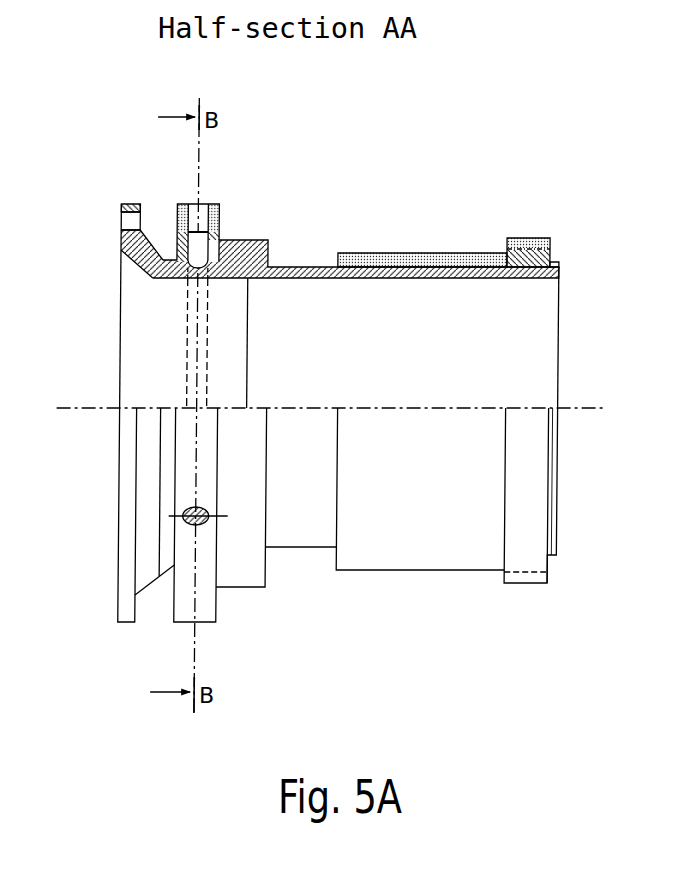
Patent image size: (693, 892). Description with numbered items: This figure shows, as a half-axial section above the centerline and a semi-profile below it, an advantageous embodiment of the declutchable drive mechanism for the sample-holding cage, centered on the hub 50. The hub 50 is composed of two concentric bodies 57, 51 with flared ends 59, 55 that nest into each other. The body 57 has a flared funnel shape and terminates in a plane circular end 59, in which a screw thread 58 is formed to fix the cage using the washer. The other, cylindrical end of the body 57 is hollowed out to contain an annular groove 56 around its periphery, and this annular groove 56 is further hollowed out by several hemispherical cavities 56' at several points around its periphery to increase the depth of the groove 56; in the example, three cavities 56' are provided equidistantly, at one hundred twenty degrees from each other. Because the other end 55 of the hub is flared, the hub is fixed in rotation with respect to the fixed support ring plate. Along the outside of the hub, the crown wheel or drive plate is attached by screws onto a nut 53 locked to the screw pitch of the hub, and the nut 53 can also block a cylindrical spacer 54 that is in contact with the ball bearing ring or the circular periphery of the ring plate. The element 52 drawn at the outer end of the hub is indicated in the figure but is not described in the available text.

The hub 50 is at (450, 167).
The concentric body 51 is at (232, 208).
The end ring 52 is at (565, 258).
The nut 53 is at (524, 235).
The cylindrical spacer 54 is at (392, 251).
The flared end 55 is at (205, 200).
The annular groove 56 is at (120, 343).
The hemispherical cavities 56' is at (119, 286).
The body 57 is at (134, 266).
The screw thread 58 is at (128, 222).
The plane circular end 59 is at (121, 206).